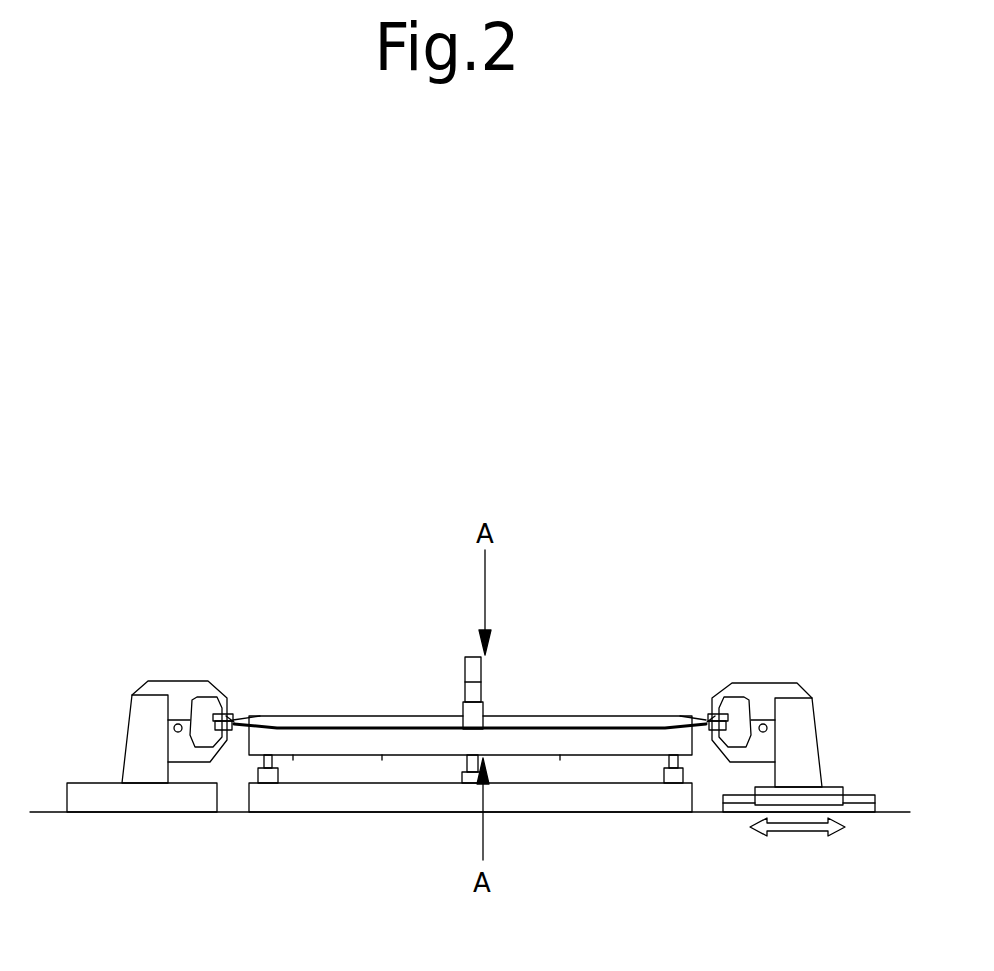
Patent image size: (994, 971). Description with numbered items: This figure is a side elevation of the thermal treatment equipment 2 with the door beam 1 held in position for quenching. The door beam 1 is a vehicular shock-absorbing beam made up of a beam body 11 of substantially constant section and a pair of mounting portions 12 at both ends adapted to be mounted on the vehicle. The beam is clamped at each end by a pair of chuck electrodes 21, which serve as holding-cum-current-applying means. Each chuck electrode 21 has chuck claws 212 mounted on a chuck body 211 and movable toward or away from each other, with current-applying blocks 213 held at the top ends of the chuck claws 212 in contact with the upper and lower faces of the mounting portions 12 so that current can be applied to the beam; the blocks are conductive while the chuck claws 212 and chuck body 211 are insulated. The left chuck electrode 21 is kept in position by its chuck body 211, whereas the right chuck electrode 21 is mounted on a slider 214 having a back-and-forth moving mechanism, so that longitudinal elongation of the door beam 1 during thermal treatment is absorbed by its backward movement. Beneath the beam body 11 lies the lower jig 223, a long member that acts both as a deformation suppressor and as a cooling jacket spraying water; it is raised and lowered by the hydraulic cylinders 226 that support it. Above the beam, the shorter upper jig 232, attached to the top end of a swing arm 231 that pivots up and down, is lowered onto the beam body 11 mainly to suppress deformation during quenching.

The door beam 1 is at (355, 743).
The thermal treatment equipment 2 is at (116, 654).
The beam body 11 is at (542, 713).
The mounting portion 12 is at (226, 714).
The chuck electrode 21 is at (177, 670).
The chuck body 211 is at (147, 762).
The chuck claw 212 is at (217, 714).
The current-applying block 213 is at (236, 720).
The slider 214 is at (858, 809).
The lower jig 223 is at (515, 747).
The hydraulic cylinder 226 is at (260, 773).
The swing arm 231 is at (472, 690).
The upper jig 232 is at (463, 705).